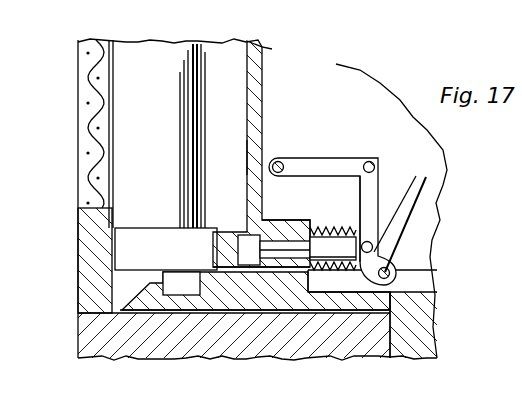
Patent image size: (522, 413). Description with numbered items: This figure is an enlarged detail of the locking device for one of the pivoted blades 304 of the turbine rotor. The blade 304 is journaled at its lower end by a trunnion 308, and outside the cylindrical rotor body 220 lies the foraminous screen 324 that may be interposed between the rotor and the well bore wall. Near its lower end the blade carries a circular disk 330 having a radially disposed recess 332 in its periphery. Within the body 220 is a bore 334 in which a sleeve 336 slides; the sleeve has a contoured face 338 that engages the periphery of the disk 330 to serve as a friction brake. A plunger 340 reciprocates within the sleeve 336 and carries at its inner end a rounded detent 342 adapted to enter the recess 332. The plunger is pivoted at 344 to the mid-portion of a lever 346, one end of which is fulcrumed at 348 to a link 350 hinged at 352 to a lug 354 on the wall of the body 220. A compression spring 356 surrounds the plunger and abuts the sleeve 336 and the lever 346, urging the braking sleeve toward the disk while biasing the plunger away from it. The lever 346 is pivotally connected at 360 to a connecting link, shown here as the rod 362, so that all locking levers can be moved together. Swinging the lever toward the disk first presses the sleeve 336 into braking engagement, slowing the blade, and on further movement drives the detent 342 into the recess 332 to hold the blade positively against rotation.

The pivoted blade 304 is at (157, 53).
The foraminous screen 324 is at (86, 88).
The cylindrical rotor body 220 is at (255, 82).
The lug 354 is at (256, 160).
The hinge 352 is at (281, 163).
The link 350 is at (332, 159).
The fulcrum 348 is at (375, 165).
The lever 346 is at (374, 188).
The link rod 362 is at (418, 200).
The pivot 344 is at (381, 243).
The pivotal connection 360 is at (421, 275).
The detent 342 is at (288, 208).
The plunger 340 is at (278, 246).
The compression spring 356 is at (310, 229).
The sleeve 336 is at (312, 270).
The circular disk 330 is at (172, 232).
The trunnion 308 is at (175, 278).
The recess 332 is at (247, 248).
The face 338 is at (250, 254).
The bore 334 is at (263, 323).